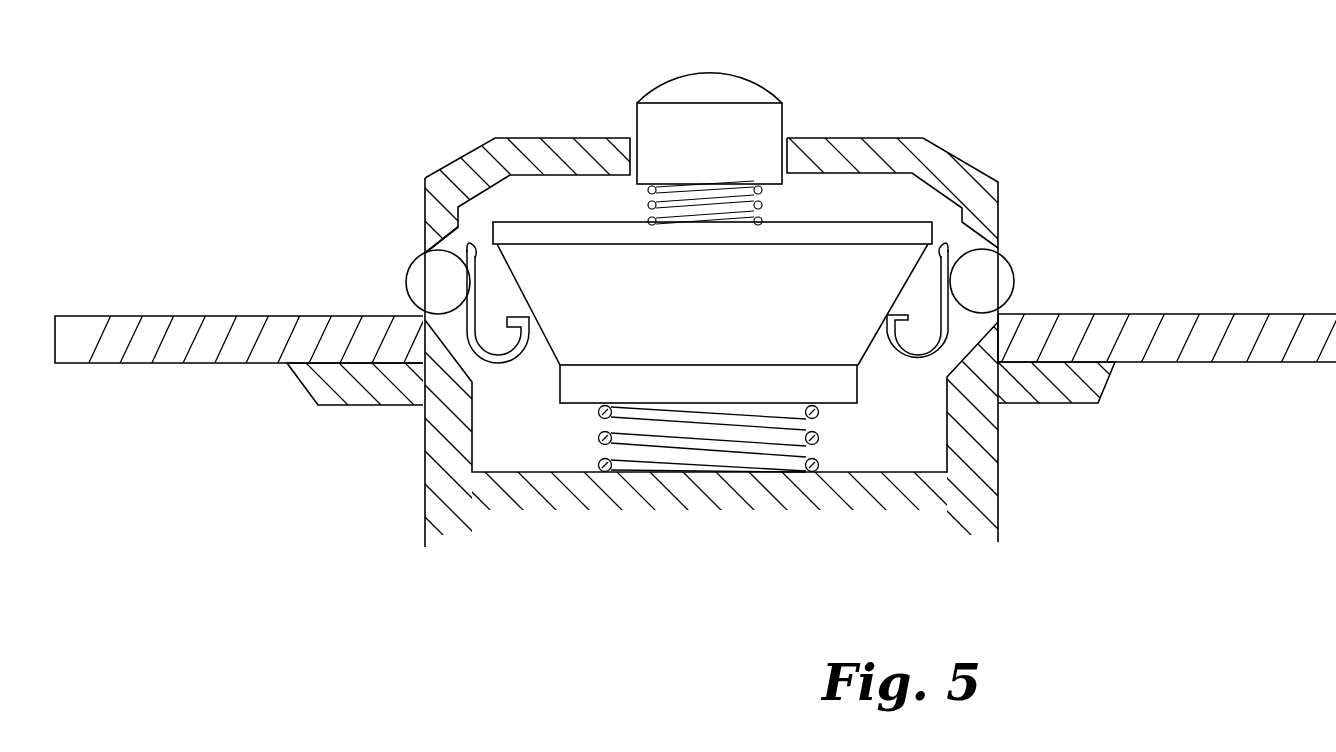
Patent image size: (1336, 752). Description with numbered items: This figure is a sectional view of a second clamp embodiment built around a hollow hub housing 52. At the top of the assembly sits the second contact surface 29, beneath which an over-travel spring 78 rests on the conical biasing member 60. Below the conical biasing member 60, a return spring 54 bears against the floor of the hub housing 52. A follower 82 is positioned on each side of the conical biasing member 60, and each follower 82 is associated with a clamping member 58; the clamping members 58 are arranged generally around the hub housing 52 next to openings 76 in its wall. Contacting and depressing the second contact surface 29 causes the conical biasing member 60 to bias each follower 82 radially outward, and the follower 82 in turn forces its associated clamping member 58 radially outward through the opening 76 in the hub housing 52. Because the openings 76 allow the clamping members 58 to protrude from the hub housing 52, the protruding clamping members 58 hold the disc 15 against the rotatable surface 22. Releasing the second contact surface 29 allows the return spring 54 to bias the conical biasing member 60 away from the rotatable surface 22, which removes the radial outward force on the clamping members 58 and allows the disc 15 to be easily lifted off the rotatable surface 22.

The disc 15 is at (217, 345).
The rotatable surface 22 is at (373, 390).
The second contact surface 29 is at (683, 88).
The hollow hub housing 52 is at (482, 170).
The return spring 54 is at (685, 448).
The clamping member 58 is at (427, 280).
The conical biasing member 60 is at (727, 303).
The opening 76 is at (442, 247).
The over-travel spring 78 is at (706, 212).
The follower 82 is at (497, 367).